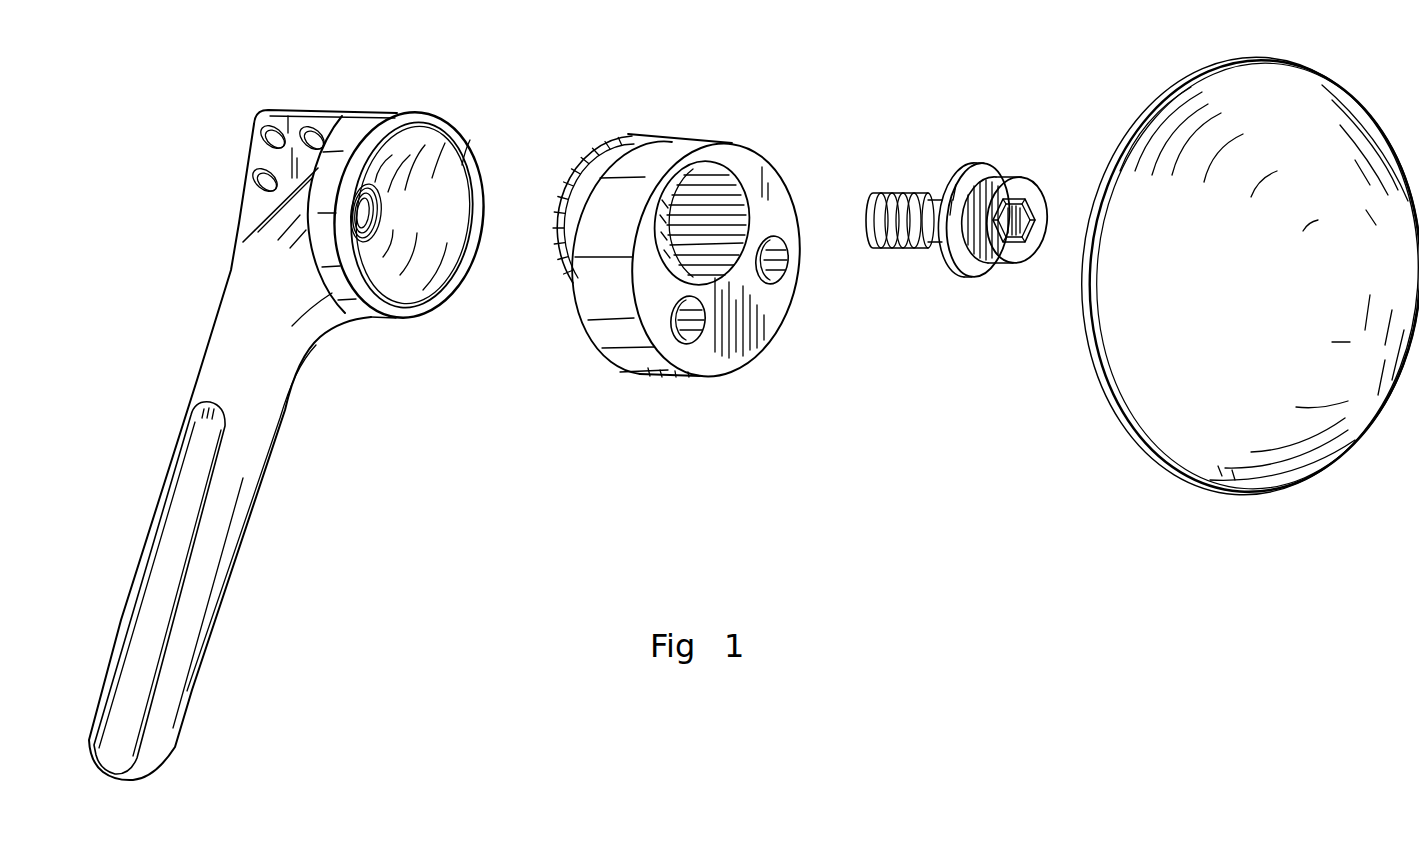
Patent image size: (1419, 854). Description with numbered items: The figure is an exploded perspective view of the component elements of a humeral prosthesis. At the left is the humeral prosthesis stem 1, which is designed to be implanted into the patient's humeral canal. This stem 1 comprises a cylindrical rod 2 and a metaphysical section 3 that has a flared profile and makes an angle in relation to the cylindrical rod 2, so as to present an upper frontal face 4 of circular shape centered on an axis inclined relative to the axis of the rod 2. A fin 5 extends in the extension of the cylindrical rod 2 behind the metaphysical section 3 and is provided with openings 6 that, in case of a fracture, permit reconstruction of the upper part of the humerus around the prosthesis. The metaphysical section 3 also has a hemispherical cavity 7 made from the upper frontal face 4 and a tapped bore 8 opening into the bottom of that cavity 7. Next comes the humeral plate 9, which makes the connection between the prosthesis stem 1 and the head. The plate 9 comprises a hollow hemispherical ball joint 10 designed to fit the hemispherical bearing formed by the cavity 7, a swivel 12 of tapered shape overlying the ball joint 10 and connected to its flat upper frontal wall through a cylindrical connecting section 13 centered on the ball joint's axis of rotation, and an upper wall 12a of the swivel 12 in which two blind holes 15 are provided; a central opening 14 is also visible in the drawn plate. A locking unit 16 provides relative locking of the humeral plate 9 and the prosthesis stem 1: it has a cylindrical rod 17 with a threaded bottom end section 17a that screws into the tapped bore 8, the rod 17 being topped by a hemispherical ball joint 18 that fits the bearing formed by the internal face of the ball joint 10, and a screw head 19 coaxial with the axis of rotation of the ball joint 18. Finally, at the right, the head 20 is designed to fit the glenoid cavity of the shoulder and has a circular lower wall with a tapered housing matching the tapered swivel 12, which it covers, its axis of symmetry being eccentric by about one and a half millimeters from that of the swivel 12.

The humeral prosthesis stem 1 is at (292, 460).
The cylindrical rod 2 is at (220, 588).
The metaphysical section 3 is at (322, 331).
The upper frontal face 4 is at (463, 163).
The fin 5 is at (251, 201).
The openings 6 is at (266, 129).
The hemispherical cavity 7 is at (400, 280).
The tapped bore 8 is at (370, 180).
The humeral plate 9 is at (622, 386).
The hollow hemispherical ball joint 10 is at (567, 173).
The swivel 12 is at (588, 291).
The upper wall 12a is at (741, 350).
The cylindrical connecting section 13 is at (631, 136).
The eccentric bore 14 is at (735, 192).
The blind holes 15 is at (785, 266).
The locking unit 16 is at (959, 152).
The cylindrical rod 17 is at (922, 254).
The threaded bottom end section 17a is at (890, 193).
The hemispherical ball joint 18 is at (975, 279).
The screw head 19 is at (1034, 192).
The head 20 is at (1120, 448).